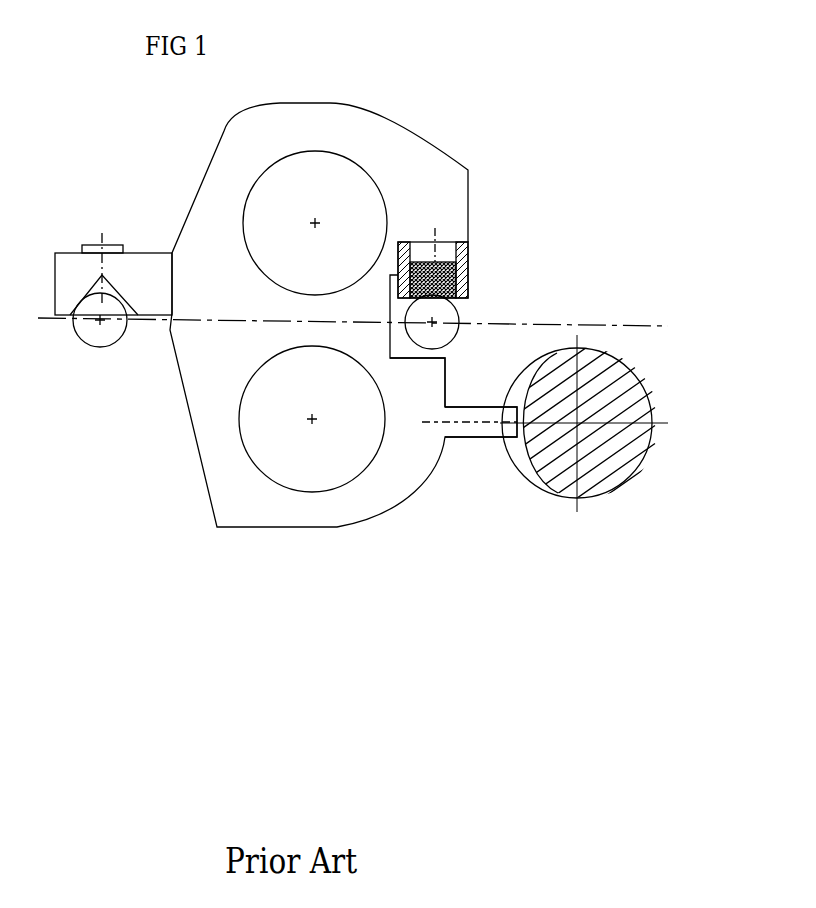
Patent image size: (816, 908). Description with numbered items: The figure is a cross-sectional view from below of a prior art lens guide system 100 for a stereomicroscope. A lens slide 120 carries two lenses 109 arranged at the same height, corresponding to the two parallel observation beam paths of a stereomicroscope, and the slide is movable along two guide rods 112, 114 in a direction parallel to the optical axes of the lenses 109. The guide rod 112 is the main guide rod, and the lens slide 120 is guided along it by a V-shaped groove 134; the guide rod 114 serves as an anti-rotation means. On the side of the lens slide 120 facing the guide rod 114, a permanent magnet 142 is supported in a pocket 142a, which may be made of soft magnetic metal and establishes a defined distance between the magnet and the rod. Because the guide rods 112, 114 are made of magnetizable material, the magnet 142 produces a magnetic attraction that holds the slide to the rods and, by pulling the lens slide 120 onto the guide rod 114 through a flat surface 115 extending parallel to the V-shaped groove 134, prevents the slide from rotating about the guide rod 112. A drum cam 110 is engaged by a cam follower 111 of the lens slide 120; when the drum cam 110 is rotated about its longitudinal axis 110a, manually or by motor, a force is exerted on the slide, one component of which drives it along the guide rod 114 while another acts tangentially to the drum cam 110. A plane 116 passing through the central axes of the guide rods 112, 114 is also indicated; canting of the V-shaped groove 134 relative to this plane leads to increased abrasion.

The guide system 100 is at (537, 107).
The lenses 109 is at (347, 183).
The drum cam 110 is at (631, 426).
The longitudinal axis 110a is at (590, 407).
The cam follower 111 is at (466, 438).
The guide rod 112 is at (85, 372).
The guide rod 114 is at (465, 310).
The flat surface 115 is at (442, 303).
The plane 116 is at (637, 327).
The lens slide 120 is at (358, 538).
The V-shaped groove 134 is at (85, 293).
The permanent magnet 142 is at (485, 261).
The pocket 142a is at (468, 282).